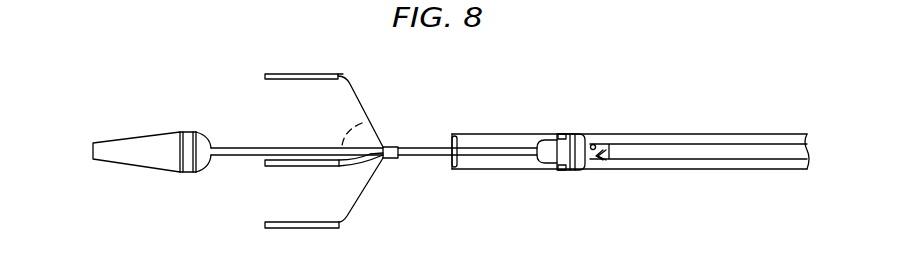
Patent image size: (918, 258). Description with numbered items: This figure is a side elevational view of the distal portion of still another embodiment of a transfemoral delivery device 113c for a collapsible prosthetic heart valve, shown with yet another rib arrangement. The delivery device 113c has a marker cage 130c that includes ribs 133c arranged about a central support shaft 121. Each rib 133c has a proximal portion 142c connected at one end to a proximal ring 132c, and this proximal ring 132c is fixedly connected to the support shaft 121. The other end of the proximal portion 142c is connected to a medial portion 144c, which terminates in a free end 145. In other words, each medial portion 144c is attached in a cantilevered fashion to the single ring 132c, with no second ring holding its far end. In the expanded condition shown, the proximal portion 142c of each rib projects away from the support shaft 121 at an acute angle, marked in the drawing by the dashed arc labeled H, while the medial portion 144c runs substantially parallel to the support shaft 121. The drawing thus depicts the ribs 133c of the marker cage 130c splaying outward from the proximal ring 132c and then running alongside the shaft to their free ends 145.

The transfemoral delivery device 113c is at (165, 77).
The support shaft 121 is at (428, 147).
The proximal ring 132c is at (387, 146).
The free end 145 is at (265, 75).
The medial portion 144c is at (290, 79).
The proximal portion 142c is at (355, 93).
The deflection angle H is at (346, 126).
The marker cage 130c is at (370, 197).
The ribs 133c is at (373, 170).